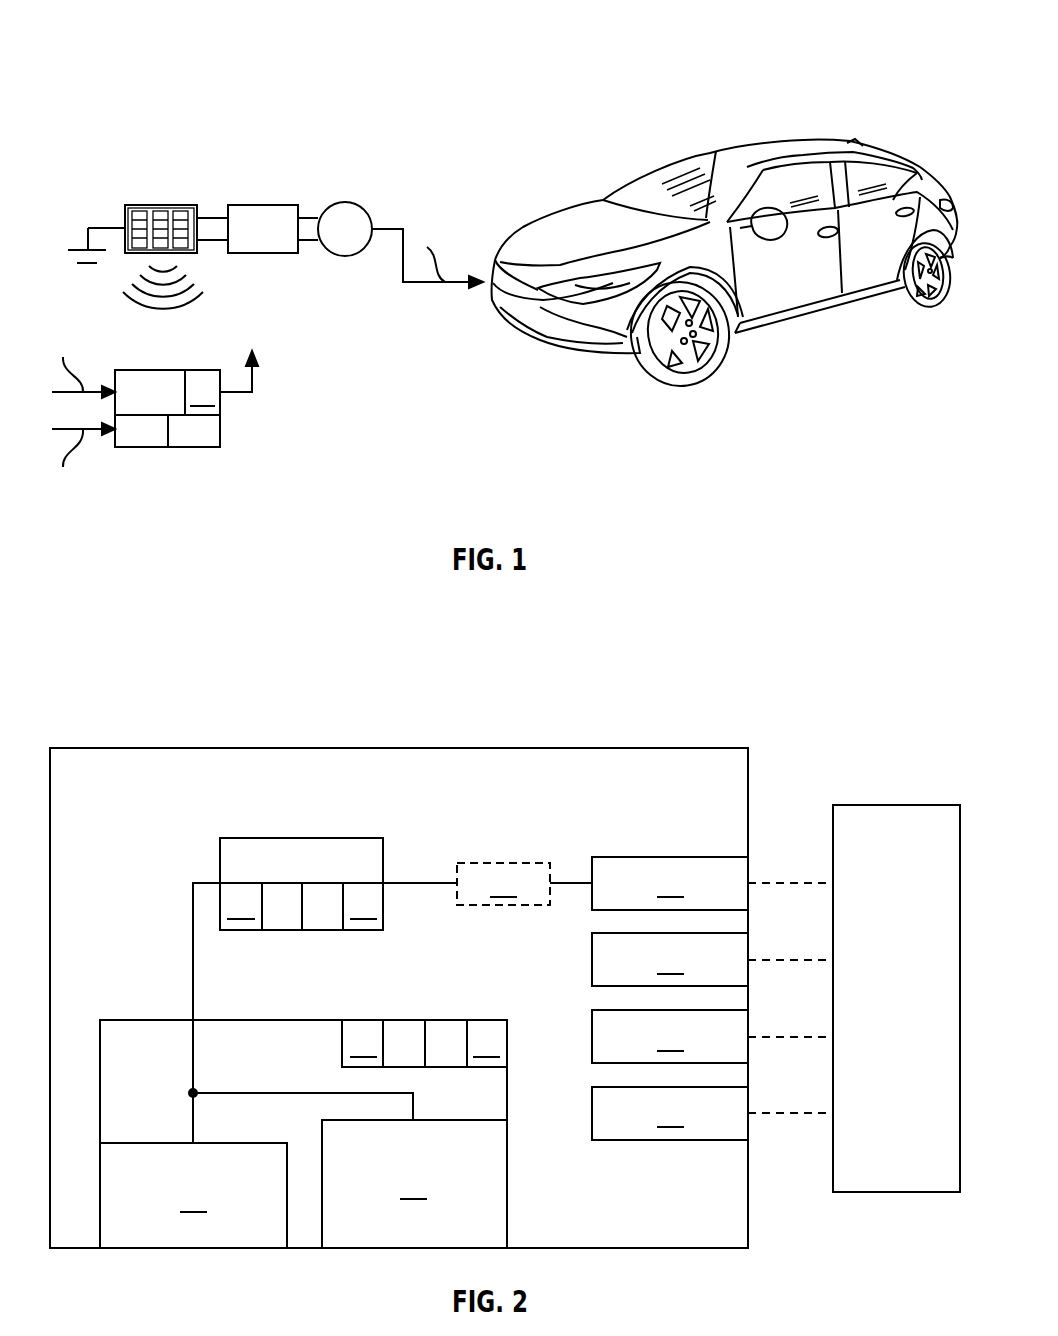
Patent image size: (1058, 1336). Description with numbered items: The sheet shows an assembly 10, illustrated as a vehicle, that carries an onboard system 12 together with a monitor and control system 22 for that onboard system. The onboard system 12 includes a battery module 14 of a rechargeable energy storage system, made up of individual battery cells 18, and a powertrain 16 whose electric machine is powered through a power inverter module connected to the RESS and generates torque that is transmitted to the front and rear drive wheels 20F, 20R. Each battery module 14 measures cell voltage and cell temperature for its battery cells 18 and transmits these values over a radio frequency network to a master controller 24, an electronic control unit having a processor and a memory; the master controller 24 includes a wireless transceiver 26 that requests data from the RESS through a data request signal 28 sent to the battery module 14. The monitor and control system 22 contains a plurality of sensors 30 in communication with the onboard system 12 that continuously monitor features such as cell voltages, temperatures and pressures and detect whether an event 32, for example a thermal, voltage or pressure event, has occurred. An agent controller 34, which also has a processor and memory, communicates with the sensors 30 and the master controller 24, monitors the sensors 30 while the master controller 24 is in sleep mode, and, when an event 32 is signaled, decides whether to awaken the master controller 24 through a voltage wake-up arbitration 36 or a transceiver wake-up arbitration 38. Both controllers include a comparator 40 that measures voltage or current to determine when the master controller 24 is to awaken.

In FIG. 1, the assembly 10 is at (786, 38).
In FIG. 1, the onboard system 12 is at (148, 36).
In FIG. 2, the onboard system 12 is at (872, 805).
In FIG. 1, the battery module 14 is at (192, 207).
In FIG. 1, the powertrain 16 is at (293, 83).
In FIG. 1, the battery cells 18 is at (140, 222).
In FIG. 1, the front drive wheels 20F is at (688, 373).
In FIG. 1, the rear drive wheels 20R is at (917, 308).
In FIG. 1, the monitor and control system 22 is at (110, 510).
In FIG. 2, the monitor and control system 22 is at (713, 748).
In FIG. 1, the master controller 24 is at (160, 370).
In FIG. 2, the master controller 24 is at (402, 1020).
In FIG. 1, the wireless transceiver 26 is at (202, 391).
In FIG. 2, the wireless transceiver 26 is at (363, 975).
In FIG. 1, the data request signal 28 is at (235, 396).
In FIG. 2, the sensors 30 is at (670, 998).
In FIG. 2, the event 32 is at (503, 884).
In FIG. 2, the agent controller 34 is at (260, 838).
In FIG. 2, the voltage wake-up arbitration 36 is at (193, 1195).
In FIG. 2, the transceiver wake-up arbitration 38 is at (414, 1184).
In FIG. 2, the comparator 40 is at (362, 975).